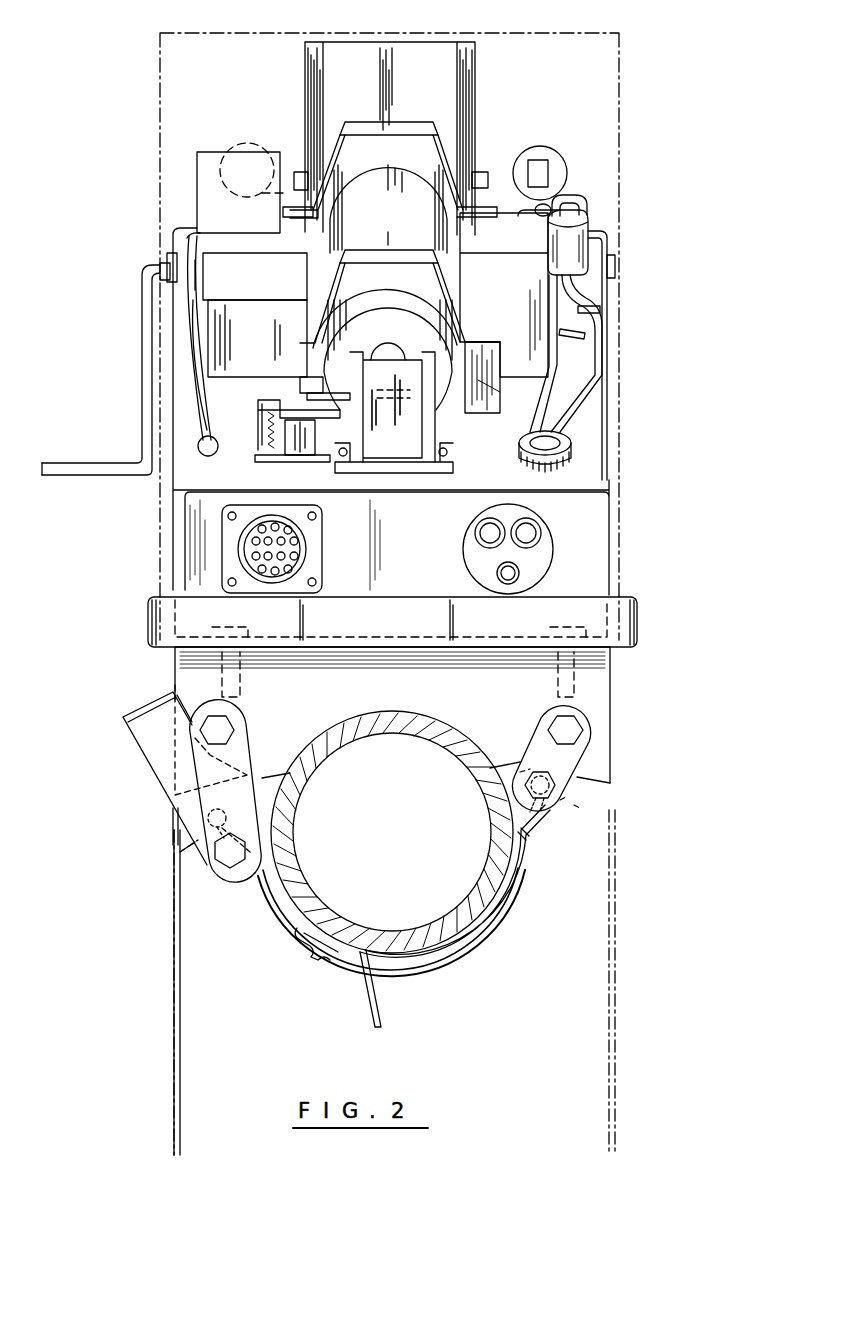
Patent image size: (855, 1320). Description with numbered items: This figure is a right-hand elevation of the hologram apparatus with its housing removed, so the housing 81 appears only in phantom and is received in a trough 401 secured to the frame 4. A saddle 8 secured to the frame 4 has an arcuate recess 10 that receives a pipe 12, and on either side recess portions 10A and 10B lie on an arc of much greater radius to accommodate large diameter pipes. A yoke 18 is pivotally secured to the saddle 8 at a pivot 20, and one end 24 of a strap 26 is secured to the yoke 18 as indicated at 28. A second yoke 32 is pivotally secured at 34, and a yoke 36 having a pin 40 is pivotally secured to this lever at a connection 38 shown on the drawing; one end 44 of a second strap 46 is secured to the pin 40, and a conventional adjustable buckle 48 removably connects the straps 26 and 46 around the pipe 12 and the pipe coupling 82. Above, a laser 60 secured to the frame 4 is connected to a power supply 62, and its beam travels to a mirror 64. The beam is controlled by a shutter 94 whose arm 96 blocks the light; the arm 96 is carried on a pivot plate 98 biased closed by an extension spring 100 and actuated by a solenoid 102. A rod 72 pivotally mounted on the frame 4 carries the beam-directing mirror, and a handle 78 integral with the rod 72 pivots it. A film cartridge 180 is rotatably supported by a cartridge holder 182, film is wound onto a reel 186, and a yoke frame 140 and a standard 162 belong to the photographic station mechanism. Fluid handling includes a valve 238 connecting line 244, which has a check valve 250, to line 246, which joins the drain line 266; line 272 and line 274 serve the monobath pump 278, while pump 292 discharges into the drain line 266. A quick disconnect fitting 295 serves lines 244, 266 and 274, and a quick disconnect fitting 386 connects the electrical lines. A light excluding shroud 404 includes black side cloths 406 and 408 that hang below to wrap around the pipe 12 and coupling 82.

The standard 162 is at (432, 52).
The cartridge holder 182 is at (211, 158).
The film cartridge 180 is at (255, 170).
The yoke frame 140 is at (488, 182).
The reel 186 is at (548, 152).
The housing 81 is at (620, 126).
The line 272 is at (520, 212).
The line 246 is at (580, 205).
The valve 238 is at (600, 245).
The rod 72 is at (150, 262).
The line 274 is at (568, 312).
The check valve 250 is at (600, 308).
The pump 278 is at (585, 336).
The line 244 is at (590, 362).
The drain line 266 is at (557, 389).
The laser 60 is at (395, 232).
The power supply 62 is at (247, 266).
The pump 292 is at (504, 313).
The mirror 64 is at (392, 360).
The shutter 94 is at (274, 392).
The arm 96 is at (322, 378).
The pivot plate 98 is at (268, 400).
The extension spring 100 is at (262, 446).
The solenoid 102 is at (300, 440).
The frame 4 is at (481, 449).
The handle 78 is at (142, 390).
The quick disconnect fitting 386 is at (303, 548).
The quick disconnect fitting 295 is at (547, 548).
The trough 401 is at (631, 600).
The saddle 8 is at (392, 715).
The pivot 34 is at (228, 726).
The second yoke 32 is at (236, 750).
The recess portion 10B is at (275, 777).
The arcuate recess 10 is at (455, 726).
The recess portion 10A is at (502, 765).
The pivot 20 is at (585, 730).
The yoke 18 is at (597, 748).
The yoke 36 is at (150, 745).
The pin 40 is at (176, 842).
The end of second strap 44 is at (192, 852).
The bolt 38 is at (222, 873).
The strap attachment 28 is at (560, 805).
The end of strap 24 is at (545, 812).
The pipe 12 is at (462, 893).
The strap 26 is at (527, 865).
The second strap 46 is at (275, 906).
The adjustable buckle 48 is at (310, 950).
The pipe coupling 82 is at (472, 942).
The light excluding shroud 404 is at (645, 926).
The side cloth 406 is at (174, 1002).
The side cloth 408 is at (617, 999).